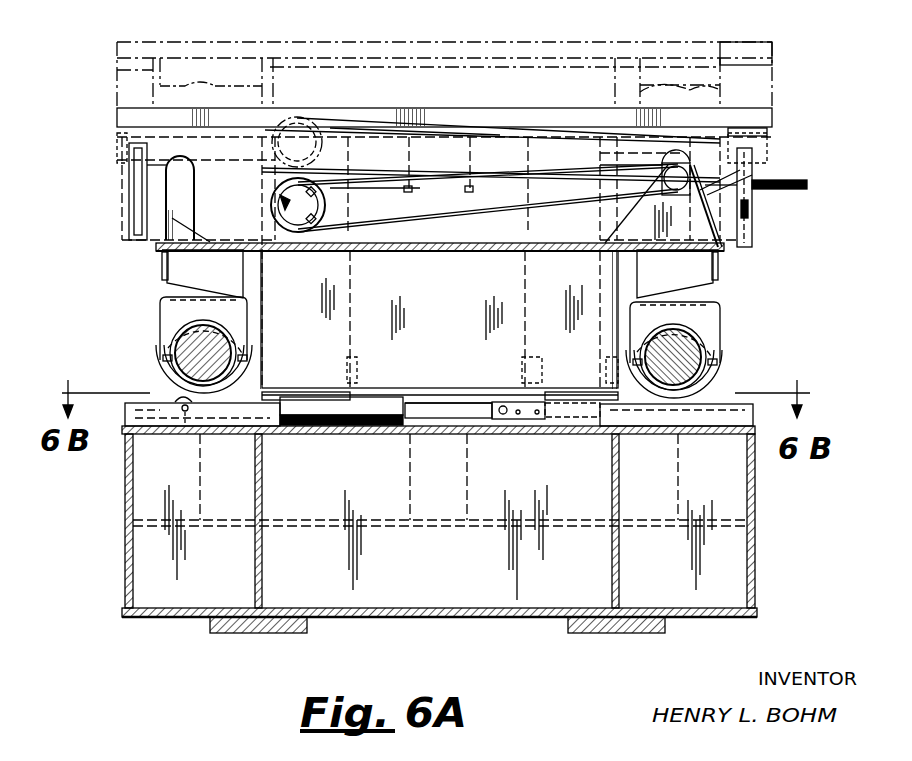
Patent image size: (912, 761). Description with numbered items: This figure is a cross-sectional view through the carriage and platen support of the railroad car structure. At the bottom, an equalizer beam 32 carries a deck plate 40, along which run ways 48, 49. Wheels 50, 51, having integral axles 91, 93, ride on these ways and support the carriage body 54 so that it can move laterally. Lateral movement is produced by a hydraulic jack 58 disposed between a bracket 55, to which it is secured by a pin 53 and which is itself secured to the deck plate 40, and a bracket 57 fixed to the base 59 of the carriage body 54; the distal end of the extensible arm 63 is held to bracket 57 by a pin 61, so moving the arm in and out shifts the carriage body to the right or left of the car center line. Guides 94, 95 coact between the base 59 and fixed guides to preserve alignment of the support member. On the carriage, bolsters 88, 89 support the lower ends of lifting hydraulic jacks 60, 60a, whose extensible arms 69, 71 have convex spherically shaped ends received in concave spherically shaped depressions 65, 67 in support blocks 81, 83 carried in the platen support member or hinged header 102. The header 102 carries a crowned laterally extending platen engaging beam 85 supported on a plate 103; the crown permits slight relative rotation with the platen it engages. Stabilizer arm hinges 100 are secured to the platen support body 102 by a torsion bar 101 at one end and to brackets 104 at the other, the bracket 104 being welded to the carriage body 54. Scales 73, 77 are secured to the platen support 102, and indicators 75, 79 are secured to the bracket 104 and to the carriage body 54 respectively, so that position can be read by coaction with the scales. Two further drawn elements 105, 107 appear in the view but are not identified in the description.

The equalizer beam 32 is at (124, 510).
The deck plate 40 is at (125, 428).
The way 48 is at (240, 412).
The way 49 is at (730, 412).
The wheel 50 is at (170, 380).
The wheel 51 is at (716, 380).
The pin 53 is at (185, 420).
The carriage body 54 is at (440, 323).
The bracket 55 is at (178, 397).
The bracket 57 is at (515, 420).
The hydraulic jack 58 is at (345, 426).
The base of carriage body 59 is at (500, 400).
The lifting hydraulic jack 60 is at (178, 262).
The lifting hydraulic jack 60a is at (700, 269).
The pin 61 is at (498, 407).
The extensible arm 63 is at (440, 426).
The concave spherically shaped depression 65 is at (200, 137).
The concave spherically shaped depression 67 is at (742, 130).
The extensible arm 69 is at (235, 140).
The extensible arm 71 is at (676, 130).
The scale 73 is at (753, 225).
The indicator 75 is at (744, 166).
The scale 77 is at (128, 217).
The indicator 79 is at (160, 163).
The support block 81 is at (270, 130).
The support block 83 is at (630, 128).
The crowned laterally extending platen engaging beam 85 is at (118, 41).
The bolster 88 is at (165, 312).
The bolster 89 is at (716, 316).
The axle 91 is at (186, 346).
The axle 93 is at (695, 350).
The guide 94 is at (297, 392).
The guide 95 is at (585, 392).
The stabilizer arm hinge 100 is at (385, 210).
The torsion bar 101 is at (320, 130).
The platen support member 102 is at (512, 152).
The plate 103 is at (448, 125).
The bracket 104 is at (612, 211).
The carriage plate 105 is at (468, 251).
The plate lower edge 107 is at (520, 246).